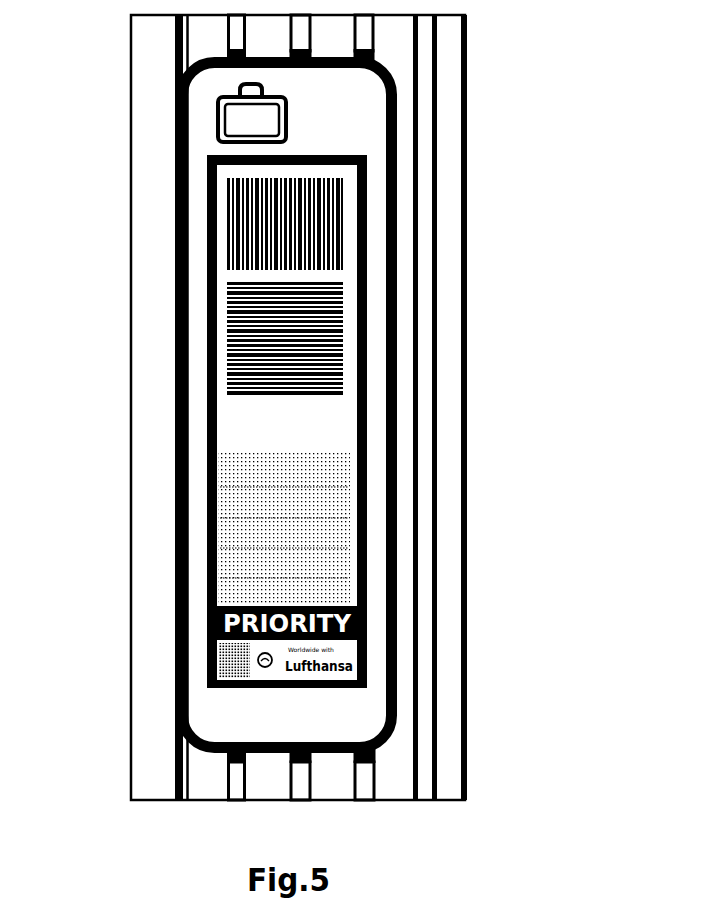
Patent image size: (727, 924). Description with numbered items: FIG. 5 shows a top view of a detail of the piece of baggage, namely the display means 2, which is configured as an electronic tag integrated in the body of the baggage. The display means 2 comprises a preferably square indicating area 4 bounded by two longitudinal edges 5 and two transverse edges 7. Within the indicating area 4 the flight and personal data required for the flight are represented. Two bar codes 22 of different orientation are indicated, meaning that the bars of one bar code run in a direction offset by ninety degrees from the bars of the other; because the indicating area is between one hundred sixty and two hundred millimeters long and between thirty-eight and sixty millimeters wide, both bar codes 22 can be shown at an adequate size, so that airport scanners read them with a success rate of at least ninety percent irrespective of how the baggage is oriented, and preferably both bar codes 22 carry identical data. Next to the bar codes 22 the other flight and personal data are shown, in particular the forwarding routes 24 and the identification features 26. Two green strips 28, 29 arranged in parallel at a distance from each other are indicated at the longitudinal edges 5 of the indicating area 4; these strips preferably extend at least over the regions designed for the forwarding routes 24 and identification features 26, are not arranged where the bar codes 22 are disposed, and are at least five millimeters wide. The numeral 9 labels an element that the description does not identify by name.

The display means 2 is at (197, 188).
The indicating area 4 is at (202, 227).
The longitudinal edges 5 is at (227, 417).
The transverse edges 7 is at (320, 170).
The tag number 9 is at (352, 443).
The bar codes 22 is at (348, 295).
The forwarding routes 24 is at (335, 560).
The identification features 26 is at (328, 597).
The green strip 28 is at (319, 538).
The green strip 29 is at (337, 582).